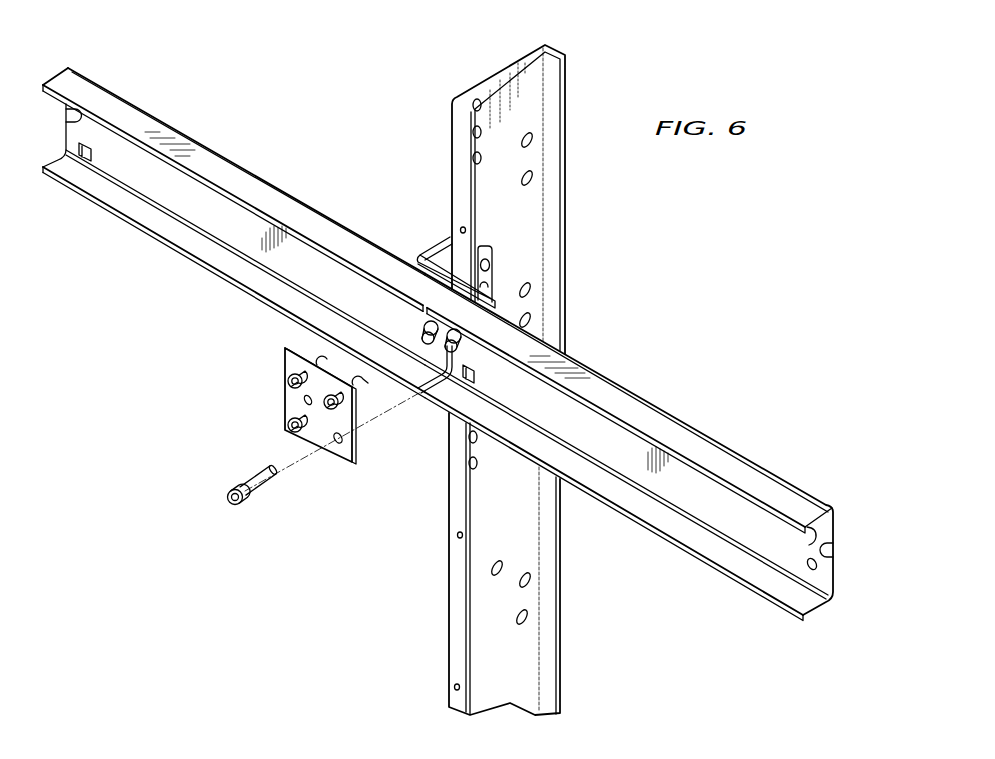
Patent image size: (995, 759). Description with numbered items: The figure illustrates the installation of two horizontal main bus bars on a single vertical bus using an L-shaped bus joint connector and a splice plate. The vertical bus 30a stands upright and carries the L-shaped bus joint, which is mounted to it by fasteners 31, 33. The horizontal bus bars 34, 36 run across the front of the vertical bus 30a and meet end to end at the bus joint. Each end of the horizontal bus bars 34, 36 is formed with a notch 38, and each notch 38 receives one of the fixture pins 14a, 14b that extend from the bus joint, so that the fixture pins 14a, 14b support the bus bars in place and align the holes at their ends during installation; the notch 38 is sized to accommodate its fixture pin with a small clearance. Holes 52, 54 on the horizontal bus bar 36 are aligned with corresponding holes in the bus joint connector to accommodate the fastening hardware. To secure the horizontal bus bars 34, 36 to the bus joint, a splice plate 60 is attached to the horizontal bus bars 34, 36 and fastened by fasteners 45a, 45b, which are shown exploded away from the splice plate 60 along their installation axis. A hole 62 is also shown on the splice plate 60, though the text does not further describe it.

The fixture pin 14a is at (421, 335).
The fixture pin 14b is at (466, 342).
The single vertical bus 30a is at (500, 64).
The fastener 31 is at (489, 267).
The fastener 33 is at (494, 301).
The horizontal main bus bar 34 is at (263, 173).
The horizontal main bus bar 36 is at (723, 443).
The notch 38 is at (72, 112).
The fastener 45a is at (284, 380).
The fastener 45b is at (322, 402).
The hole 52 is at (56, 76).
The hole 54 is at (84, 158).
The splice plate 60 is at (357, 446).
The plate hole 62 is at (338, 446).